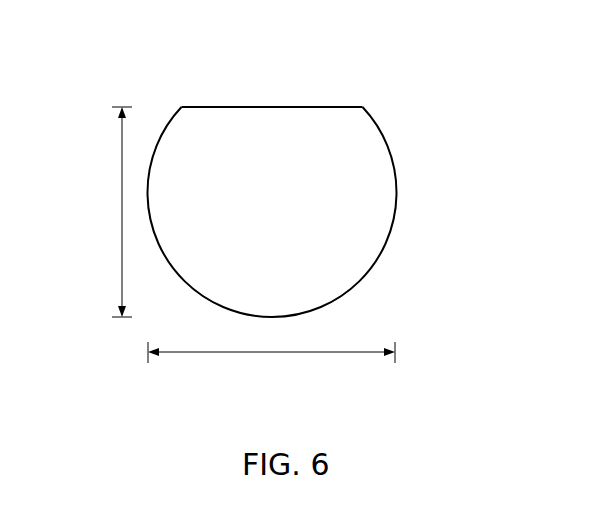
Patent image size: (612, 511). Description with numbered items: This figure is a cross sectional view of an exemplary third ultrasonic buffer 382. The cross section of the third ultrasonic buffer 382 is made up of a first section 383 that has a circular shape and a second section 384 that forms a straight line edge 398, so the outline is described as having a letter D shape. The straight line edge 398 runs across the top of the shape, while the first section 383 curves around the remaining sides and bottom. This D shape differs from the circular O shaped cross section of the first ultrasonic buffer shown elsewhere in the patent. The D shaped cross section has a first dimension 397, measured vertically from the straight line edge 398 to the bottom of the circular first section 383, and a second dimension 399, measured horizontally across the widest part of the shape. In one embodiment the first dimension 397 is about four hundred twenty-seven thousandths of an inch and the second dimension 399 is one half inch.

The straight line edge 398 is at (291, 84).
The second section 384 is at (210, 107).
The third ultrasonic buffer 382 is at (413, 130).
The first section 383 is at (396, 203).
The first dimension 397 is at (121, 215).
The second dimension 399 is at (272, 352).